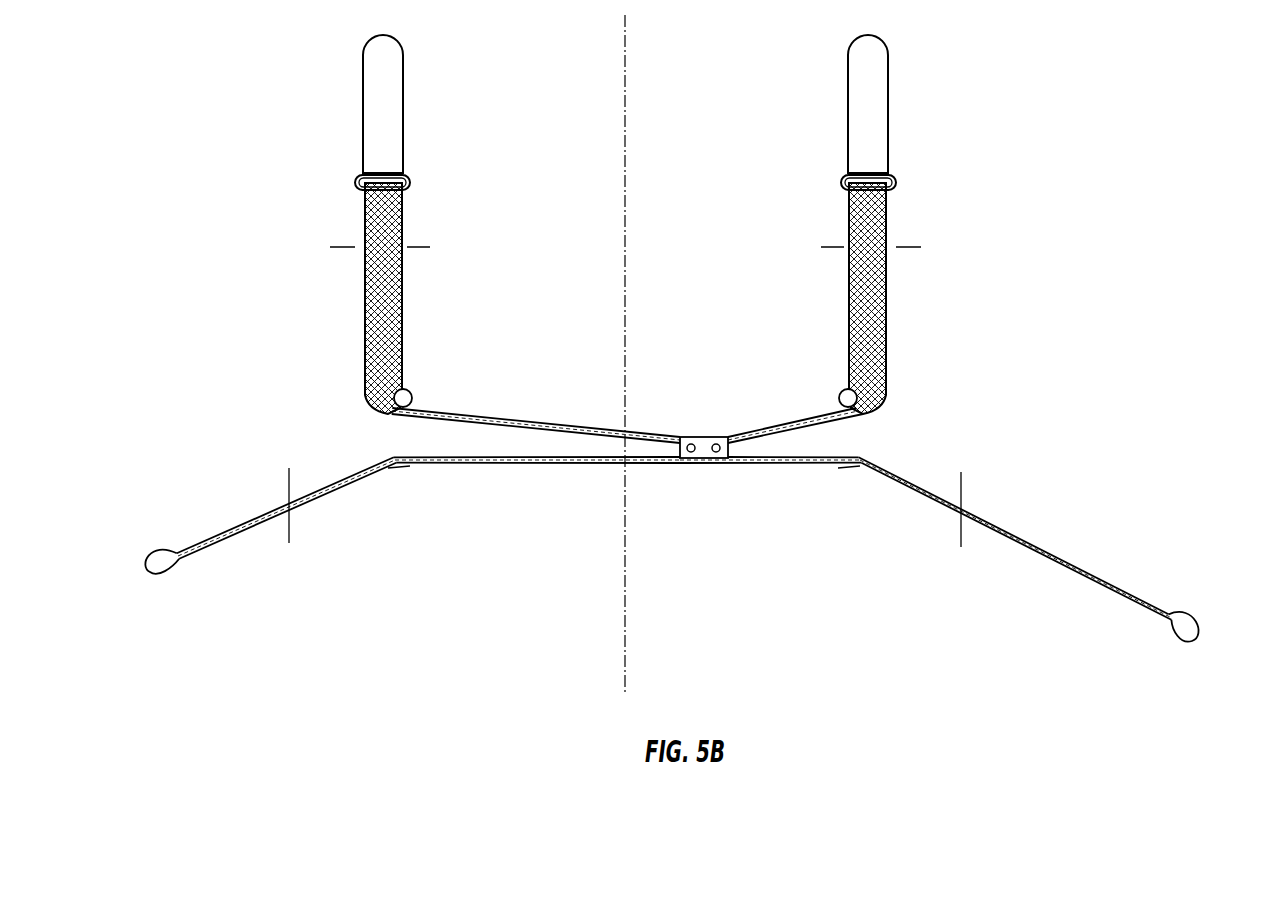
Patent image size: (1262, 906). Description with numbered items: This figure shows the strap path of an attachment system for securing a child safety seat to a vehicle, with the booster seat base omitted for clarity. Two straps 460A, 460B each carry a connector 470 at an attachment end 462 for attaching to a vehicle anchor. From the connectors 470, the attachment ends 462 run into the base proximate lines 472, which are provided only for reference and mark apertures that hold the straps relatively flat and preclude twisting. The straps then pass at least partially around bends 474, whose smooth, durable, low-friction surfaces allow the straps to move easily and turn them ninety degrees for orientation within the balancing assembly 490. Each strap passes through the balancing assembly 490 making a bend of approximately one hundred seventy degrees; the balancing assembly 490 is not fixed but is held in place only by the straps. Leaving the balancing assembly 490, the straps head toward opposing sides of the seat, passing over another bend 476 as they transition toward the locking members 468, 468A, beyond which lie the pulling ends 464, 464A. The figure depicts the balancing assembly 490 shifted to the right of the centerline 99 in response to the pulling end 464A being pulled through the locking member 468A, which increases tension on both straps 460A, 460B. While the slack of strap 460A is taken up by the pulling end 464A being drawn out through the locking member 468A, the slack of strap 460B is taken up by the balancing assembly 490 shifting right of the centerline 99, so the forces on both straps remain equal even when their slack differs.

The centerline 99 is at (627, 371).
The connector 470 is at (405, 102).
The attachment end 462 is at (405, 213).
The lines 472 is at (643, 248).
The bends 474 is at (412, 390).
The balancing assembly 490 is at (708, 437).
The strap 460A is at (778, 464).
The strap 460B is at (498, 464).
The bend 476 is at (396, 470).
The locking member 468 is at (287, 480).
The locking member 468A is at (965, 485).
The pulling end 464 is at (200, 547).
The pulling end 464A is at (1145, 603).